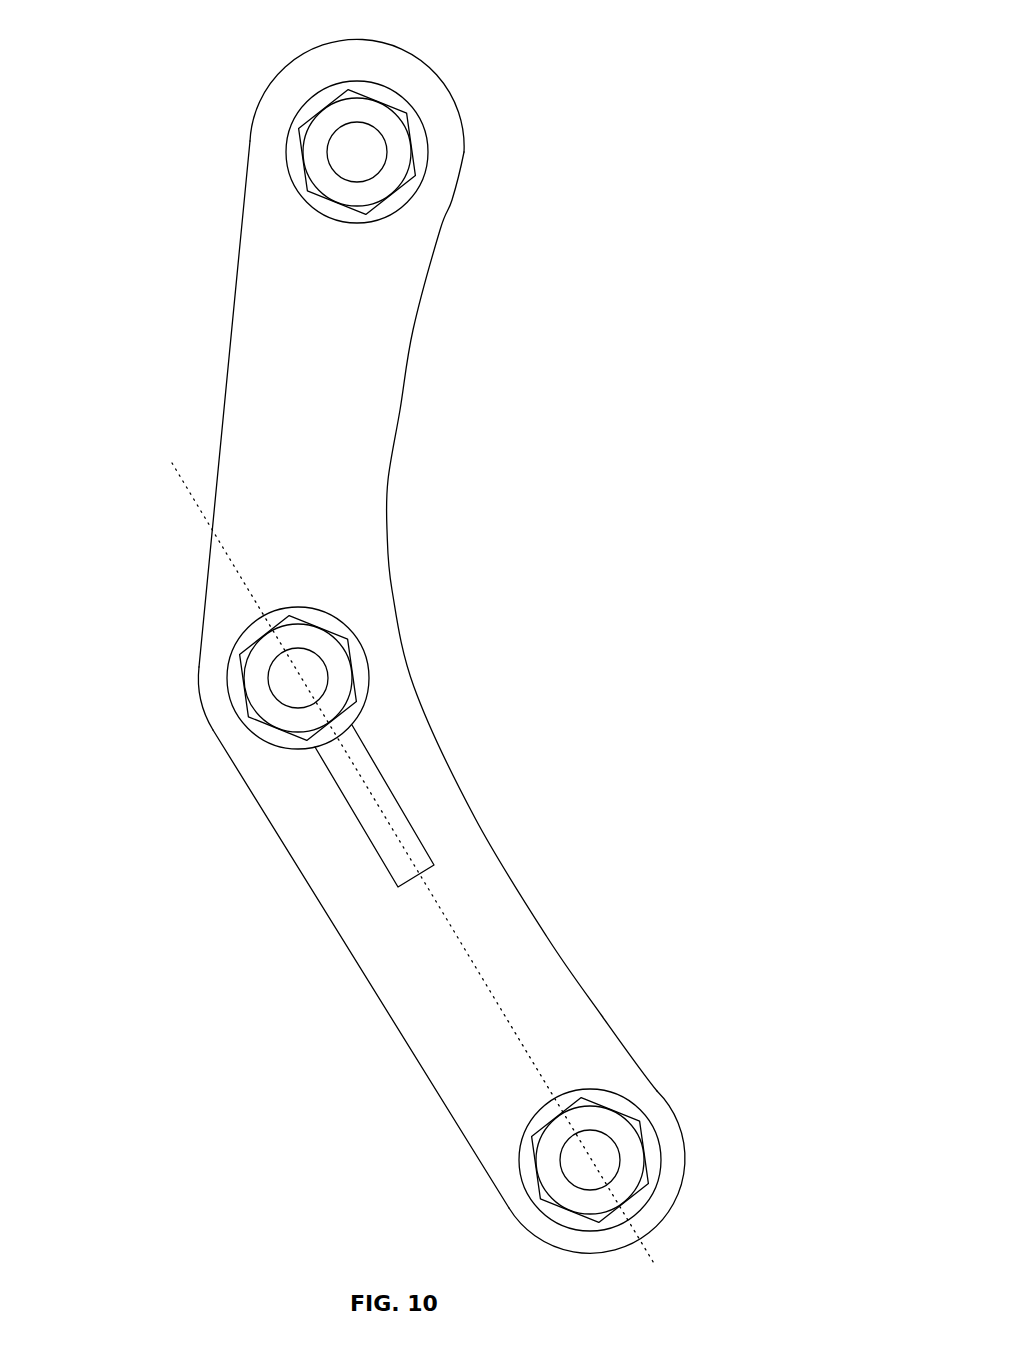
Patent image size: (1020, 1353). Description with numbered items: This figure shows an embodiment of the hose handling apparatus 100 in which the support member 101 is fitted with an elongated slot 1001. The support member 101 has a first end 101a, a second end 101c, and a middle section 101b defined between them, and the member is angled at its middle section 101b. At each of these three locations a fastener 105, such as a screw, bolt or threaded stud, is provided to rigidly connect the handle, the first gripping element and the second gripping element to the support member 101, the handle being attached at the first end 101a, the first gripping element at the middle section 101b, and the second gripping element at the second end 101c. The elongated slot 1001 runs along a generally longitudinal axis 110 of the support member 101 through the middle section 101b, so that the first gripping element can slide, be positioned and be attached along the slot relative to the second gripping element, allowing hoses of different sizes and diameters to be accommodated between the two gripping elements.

The hose handling apparatus 100 is at (485, 64).
The support member 101 is at (394, 496).
The first end 101a is at (268, 77).
The middle section 101b is at (194, 673).
The second end 101c is at (691, 1178).
The fasteners 105 is at (411, 186).
The longitudinal axis 110 is at (172, 459).
The elongated slot 1001 is at (354, 814).